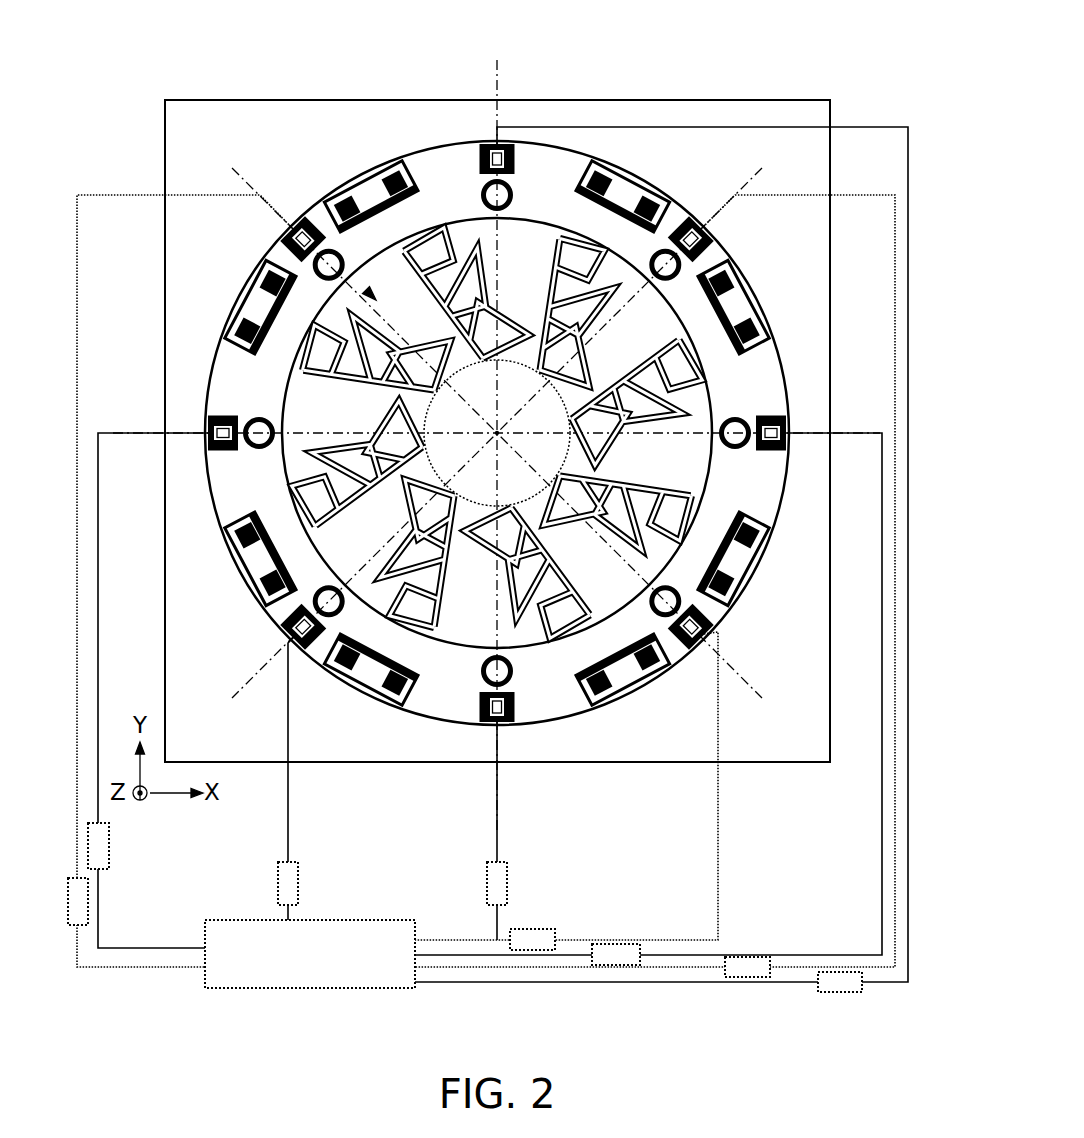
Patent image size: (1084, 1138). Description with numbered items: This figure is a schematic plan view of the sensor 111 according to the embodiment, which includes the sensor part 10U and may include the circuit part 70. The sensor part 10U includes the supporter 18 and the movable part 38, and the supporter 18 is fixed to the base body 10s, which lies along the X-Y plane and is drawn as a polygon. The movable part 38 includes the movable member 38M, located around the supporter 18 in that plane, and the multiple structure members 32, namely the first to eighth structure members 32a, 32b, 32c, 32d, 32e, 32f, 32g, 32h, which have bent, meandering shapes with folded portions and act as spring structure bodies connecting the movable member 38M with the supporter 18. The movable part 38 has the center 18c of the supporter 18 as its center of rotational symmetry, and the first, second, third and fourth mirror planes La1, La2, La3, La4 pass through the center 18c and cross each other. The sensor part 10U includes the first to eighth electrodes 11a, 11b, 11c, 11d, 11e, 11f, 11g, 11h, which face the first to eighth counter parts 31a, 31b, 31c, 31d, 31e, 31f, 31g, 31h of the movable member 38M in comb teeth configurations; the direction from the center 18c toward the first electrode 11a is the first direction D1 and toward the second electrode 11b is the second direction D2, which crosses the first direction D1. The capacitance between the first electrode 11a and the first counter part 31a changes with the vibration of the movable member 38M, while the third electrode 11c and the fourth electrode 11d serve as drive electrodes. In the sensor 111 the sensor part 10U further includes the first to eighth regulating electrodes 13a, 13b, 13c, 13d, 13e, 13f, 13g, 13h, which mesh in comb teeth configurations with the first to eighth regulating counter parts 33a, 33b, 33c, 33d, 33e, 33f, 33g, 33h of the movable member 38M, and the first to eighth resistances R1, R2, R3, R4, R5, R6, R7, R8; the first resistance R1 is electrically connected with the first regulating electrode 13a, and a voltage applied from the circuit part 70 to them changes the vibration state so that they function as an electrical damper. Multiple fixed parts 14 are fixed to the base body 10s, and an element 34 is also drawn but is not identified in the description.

The sensor part 10U is at (795, 78).
The base body 10s is at (215, 100).
The sensor 111 is at (910, 95).
The movable part 38 is at (518, 110).
The movable member 38M is at (470, 162).
The first regulating electrode 13a is at (468, 94).
The second regulating electrode 13b is at (713, 202).
The third regulating electrode 13c is at (791, 425).
The fourth regulating electrode 13d is at (730, 657).
The fifth regulating electrode 13e is at (493, 761).
The sixth regulating electrode 13f is at (270, 676).
The seventh regulating electrode 13g is at (203, 422).
The eighth regulating electrode 13h is at (252, 195).
The first regulating counter part 33a is at (478, 162).
The second regulating counter part 33b is at (688, 225).
The third regulating counter part 33c is at (782, 425).
The fourth regulating counter part 33d is at (708, 632).
The fifth regulating counter part 33e is at (515, 720).
The sixth regulating counter part 33f is at (292, 636).
The seventh regulating counter part 33g is at (222, 418).
The eighth regulating counter part 33h is at (300, 230).
The first counter part 31a is at (580, 188).
The second counter part 31b is at (722, 262).
The third counter part 31c is at (362, 683).
The fourth counter part 31d is at (248, 548).
The fifth counter part 31e is at (738, 596).
The sixth counter part 31f is at (580, 663).
The seventh counter part 31g is at (296, 270).
The eighth counter part 31h is at (420, 190).
The first electrode 11a is at (616, 192).
The second electrode 11b is at (742, 298).
The third electrode 11c is at (400, 690).
The fourth electrode 11d is at (262, 580).
The fifth electrode 11e is at (748, 570).
The sixth electrode 11f is at (640, 683).
The seventh electrode 11g is at (252, 318).
The eighth electrode 11h is at (360, 203).
The structure members 32 is at (362, 288).
The first structure member 32a is at (545, 310).
The second structure member 32b is at (617, 380).
The third structure member 32c is at (622, 486).
The fourth structure member 32d is at (575, 558).
The fifth structure member 32e is at (405, 550).
The sixth structure member 32f is at (380, 483).
The seventh structure member 32g is at (370, 377).
The eighth structure member 32h is at (450, 310).
The stator 34 is at (466, 219).
The fixed part 14 is at (508, 207).
The supporter 18 is at (488, 490).
The center 18c is at (497, 436).
The circuit part 70 is at (205, 930).
The first resistance R1 is at (842, 993).
The second resistance R2 is at (748, 978).
The third resistance R3 is at (618, 966).
The fourth resistance R4 is at (535, 952).
The fifth resistance R5 is at (510, 885).
The sixth resistance R6 is at (300, 885).
The seventh resistance R7 is at (112, 847).
The eighth resistance R8 is at (77, 925).
The first mirror plane La1 is at (143, 433).
The second mirror plane La2 is at (505, 795).
The third mirror plane La3 is at (735, 700).
The fourth mirror plane La4 is at (258, 705).
The first direction D1 is at (762, 880).
The second direction D2 is at (762, 880).